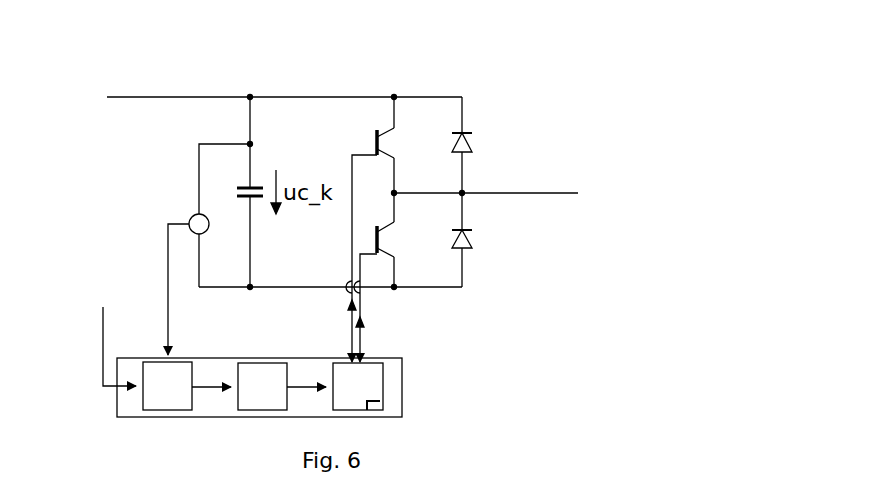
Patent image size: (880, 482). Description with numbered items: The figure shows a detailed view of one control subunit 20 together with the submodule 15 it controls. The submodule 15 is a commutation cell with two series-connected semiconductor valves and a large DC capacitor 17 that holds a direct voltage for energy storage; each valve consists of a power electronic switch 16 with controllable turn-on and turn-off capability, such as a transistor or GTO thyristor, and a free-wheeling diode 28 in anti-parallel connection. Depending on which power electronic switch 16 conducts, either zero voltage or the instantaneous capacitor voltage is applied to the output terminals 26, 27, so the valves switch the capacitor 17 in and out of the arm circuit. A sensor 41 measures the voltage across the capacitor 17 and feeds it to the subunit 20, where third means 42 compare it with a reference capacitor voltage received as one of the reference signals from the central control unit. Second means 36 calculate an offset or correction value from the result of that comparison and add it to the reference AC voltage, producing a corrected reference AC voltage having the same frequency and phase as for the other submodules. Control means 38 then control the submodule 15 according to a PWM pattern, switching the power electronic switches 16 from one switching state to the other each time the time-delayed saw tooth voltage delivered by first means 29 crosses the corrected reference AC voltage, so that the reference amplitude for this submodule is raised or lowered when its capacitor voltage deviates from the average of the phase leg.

The submodule 15 is at (403, 71).
The power electronic switch 16 is at (376, 142).
The DC capacitor 17 is at (254, 186).
The subunit 20 is at (104, 403).
The output terminal 26 is at (190, 97).
The output terminal 27 is at (495, 194).
The free-wheeling diode 28 is at (470, 139).
The first means 29 is at (378, 408).
The second means 36 is at (262, 368).
The control means 38 is at (365, 368).
The sensor 41 is at (196, 214).
The third means 42 is at (175, 370).